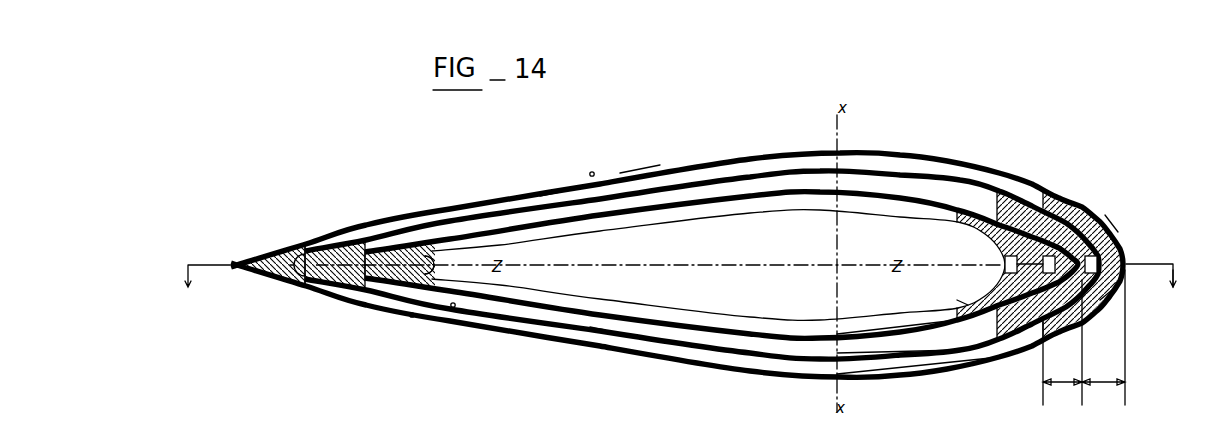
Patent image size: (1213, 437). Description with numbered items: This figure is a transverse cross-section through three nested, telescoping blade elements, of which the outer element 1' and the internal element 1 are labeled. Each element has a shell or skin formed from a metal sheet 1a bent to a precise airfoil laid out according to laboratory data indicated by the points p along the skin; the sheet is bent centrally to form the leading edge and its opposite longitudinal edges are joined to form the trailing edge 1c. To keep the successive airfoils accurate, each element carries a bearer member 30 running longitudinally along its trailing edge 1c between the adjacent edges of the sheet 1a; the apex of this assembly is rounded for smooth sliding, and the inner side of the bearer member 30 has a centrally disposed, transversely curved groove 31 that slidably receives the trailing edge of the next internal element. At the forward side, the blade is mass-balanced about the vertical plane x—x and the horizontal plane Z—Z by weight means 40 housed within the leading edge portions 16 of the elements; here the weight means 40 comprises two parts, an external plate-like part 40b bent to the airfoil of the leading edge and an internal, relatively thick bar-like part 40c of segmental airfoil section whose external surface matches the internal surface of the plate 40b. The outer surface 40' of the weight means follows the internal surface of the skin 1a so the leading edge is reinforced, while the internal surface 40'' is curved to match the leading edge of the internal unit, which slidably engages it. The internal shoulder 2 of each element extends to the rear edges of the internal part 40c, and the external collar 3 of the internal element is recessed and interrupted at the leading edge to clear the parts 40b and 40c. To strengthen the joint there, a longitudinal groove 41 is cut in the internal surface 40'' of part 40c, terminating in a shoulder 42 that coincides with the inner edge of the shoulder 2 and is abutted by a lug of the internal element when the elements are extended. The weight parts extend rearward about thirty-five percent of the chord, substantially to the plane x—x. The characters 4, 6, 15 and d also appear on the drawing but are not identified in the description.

The internal element 1 is at (677, 283).
The outer element 1' is at (541, 169).
The metal sheet 1a is at (637, 170).
The trailing edge 1c is at (357, 270).
The internal shoulder 2 is at (806, 350).
The external collar 3 is at (543, 332).
The lower skin layer 4 is at (597, 322).
The cavity 6 is at (767, 247).
The section line 15 is at (688, 265).
The leading edge portion 16 is at (1183, 287).
The bearer member 30 is at (393, 247).
The groove 31 is at (432, 272).
The weight means 40 is at (1127, 209).
The outer surface of weight means 40' is at (1131, 312).
The internal surface of weight means 40'' is at (940, 292).
The external mass-balancing part 40b is at (993, 362).
The internal mass-balancing part 40c is at (1060, 210).
The longitudinal groove 41 is at (1005, 262).
The shoulder 42 is at (1005, 270).
The points p is at (453, 308).
The spacing dimension d is at (1084, 337).